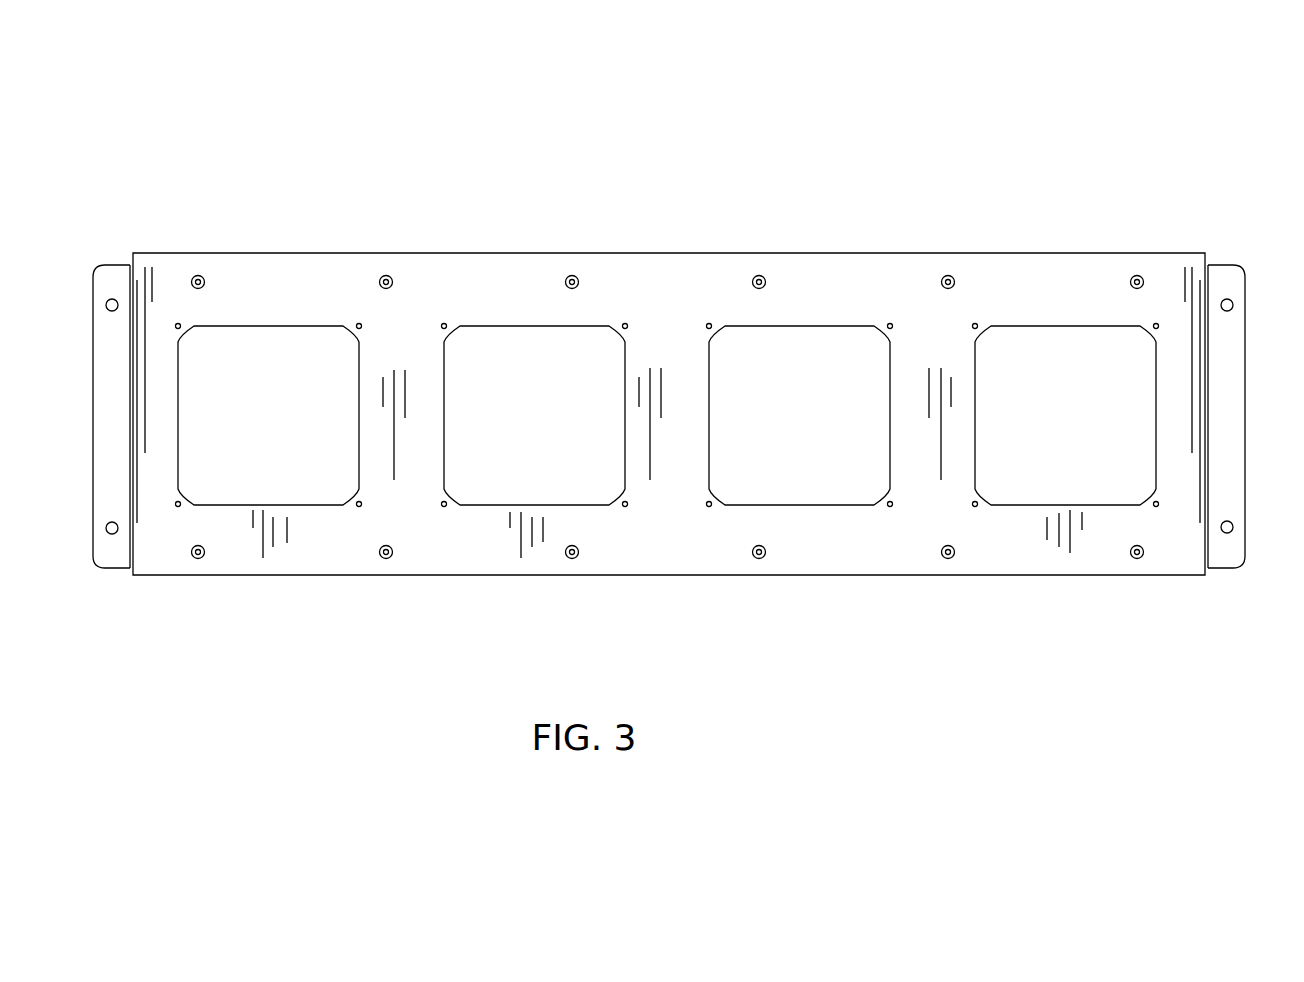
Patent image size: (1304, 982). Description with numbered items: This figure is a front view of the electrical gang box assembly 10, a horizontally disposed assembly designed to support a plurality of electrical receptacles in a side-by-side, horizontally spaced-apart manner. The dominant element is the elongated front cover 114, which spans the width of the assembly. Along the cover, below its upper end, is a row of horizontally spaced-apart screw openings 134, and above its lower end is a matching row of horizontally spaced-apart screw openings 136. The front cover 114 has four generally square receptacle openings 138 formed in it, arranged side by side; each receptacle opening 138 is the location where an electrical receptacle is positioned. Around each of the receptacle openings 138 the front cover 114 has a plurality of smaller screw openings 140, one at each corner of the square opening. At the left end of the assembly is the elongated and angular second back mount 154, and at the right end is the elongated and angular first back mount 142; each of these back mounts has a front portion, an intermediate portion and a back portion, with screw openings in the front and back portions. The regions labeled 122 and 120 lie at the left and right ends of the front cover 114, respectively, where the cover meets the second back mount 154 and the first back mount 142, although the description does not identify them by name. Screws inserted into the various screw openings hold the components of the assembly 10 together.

The electrical gang box assembly 10 is at (996, 174).
The front cover 114 is at (810, 250).
The right bend / flange transition 120 is at (1207, 280).
The left bend / flange transition 122 is at (132, 290).
The screw openings 134 is at (567, 278).
The screw openings 136 is at (573, 558).
The receptacle opening 138 is at (310, 327).
The screw openings 140 is at (358, 322).
The first back mount 142 is at (1248, 458).
The second back mount 154 is at (89, 465).